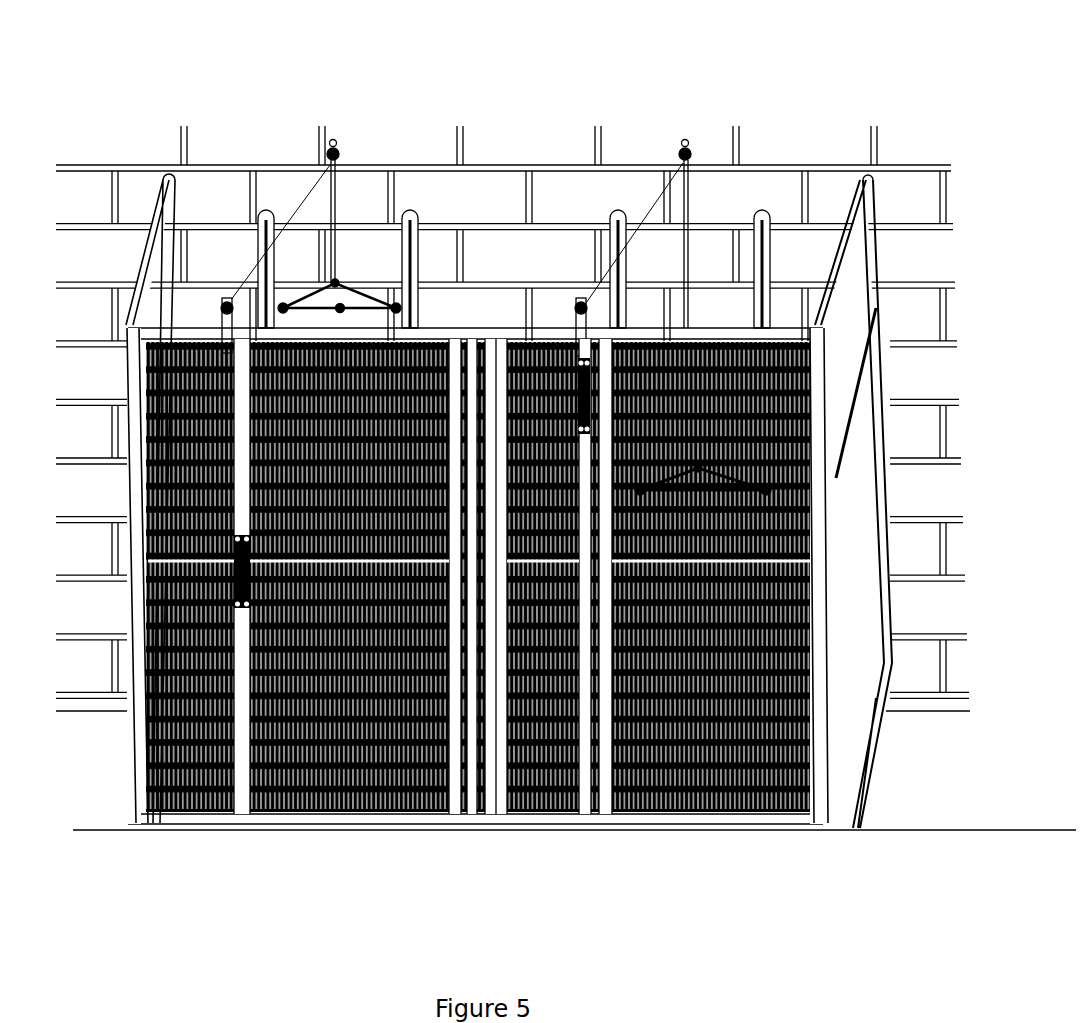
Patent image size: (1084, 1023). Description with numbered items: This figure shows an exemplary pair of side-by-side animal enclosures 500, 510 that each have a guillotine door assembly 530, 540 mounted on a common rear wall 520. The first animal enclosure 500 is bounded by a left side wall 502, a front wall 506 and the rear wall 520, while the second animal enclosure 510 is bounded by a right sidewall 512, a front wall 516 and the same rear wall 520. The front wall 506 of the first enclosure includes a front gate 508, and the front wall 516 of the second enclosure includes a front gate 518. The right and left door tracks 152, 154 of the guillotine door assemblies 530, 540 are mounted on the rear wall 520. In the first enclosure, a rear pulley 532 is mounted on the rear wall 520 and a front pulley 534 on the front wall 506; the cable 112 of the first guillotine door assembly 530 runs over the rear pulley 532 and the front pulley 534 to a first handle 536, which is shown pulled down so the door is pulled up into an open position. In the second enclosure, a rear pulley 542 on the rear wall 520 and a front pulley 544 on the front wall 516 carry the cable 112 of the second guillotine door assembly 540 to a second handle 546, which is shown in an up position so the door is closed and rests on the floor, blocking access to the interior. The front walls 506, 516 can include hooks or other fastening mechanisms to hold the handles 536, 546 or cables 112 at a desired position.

The cable 112 is at (297, 188).
The right door track 152 is at (404, 210).
The left door track 154 is at (252, 205).
The first animal enclosure 500 is at (277, 649).
The left side wall 502 is at (147, 262).
The front wall 506 is at (225, 843).
The front gate 508 is at (330, 785).
The second animal enclosure 510 is at (641, 609).
The right sidewall 512 is at (858, 687).
The front wall 516 is at (603, 838).
The front gate 518 is at (705, 790).
The rear wall 520 is at (52, 315).
The first guillotine door assembly 530 is at (366, 189).
The rear pulley 532 is at (327, 133).
The front pulley 534 is at (224, 300).
The first handle 536 is at (222, 548).
The second guillotine door assembly 540 is at (739, 192).
The rear pulley 542 is at (675, 133).
The front pulley 544 is at (574, 297).
The second handle 546 is at (590, 350).